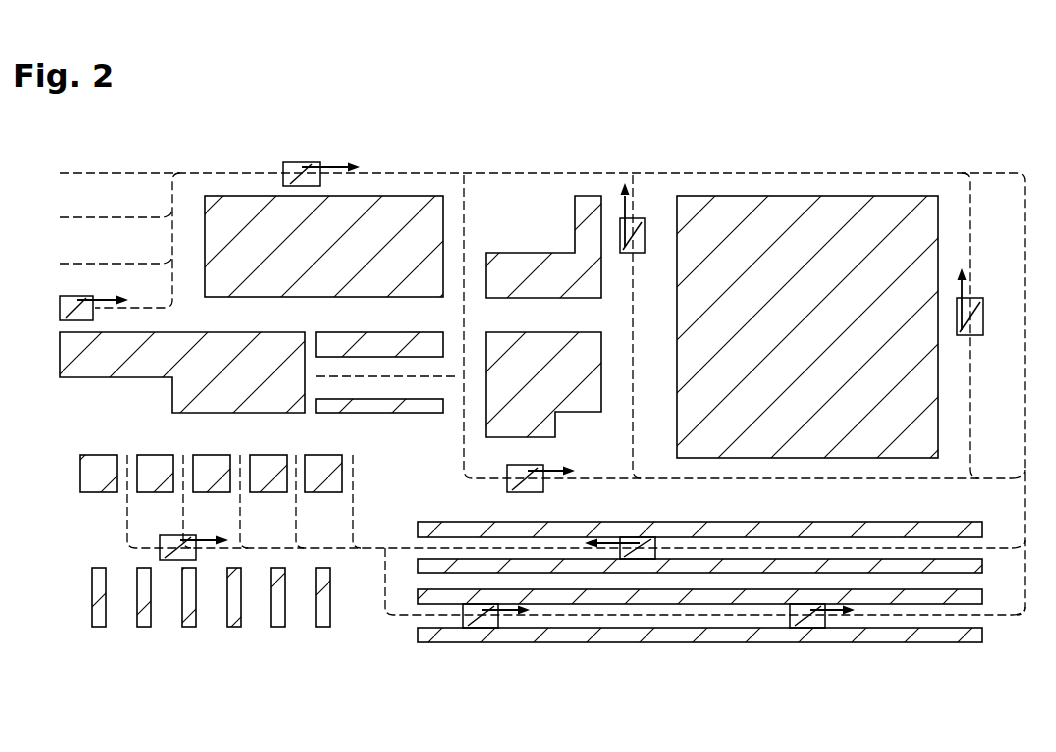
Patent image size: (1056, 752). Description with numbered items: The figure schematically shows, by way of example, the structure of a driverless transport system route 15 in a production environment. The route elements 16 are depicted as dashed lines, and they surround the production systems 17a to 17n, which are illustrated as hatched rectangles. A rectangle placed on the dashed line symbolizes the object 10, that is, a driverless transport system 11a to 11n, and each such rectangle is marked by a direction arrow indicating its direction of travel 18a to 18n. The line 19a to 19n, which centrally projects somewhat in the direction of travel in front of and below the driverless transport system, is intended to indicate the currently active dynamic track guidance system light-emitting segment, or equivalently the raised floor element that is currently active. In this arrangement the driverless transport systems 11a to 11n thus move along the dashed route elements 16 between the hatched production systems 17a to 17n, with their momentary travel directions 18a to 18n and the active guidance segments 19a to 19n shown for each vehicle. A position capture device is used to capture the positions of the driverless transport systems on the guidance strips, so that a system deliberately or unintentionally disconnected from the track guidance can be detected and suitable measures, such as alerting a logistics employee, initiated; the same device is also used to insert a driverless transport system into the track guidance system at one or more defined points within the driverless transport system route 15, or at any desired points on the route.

The object 10 is at (477, 648).
The driverless transport system 11a is at (298, 168).
The driverless transport system 11n is at (470, 628).
The driverless transport system route 15 is at (752, 133).
The route element 16 is at (882, 172).
The production system 17a is at (217, 213).
The production system 17n is at (920, 634).
The direction of travel 18a is at (329, 162).
The direction of travel 18n is at (508, 628).
The line 19a is at (633, 205).
The line 19n is at (837, 626).